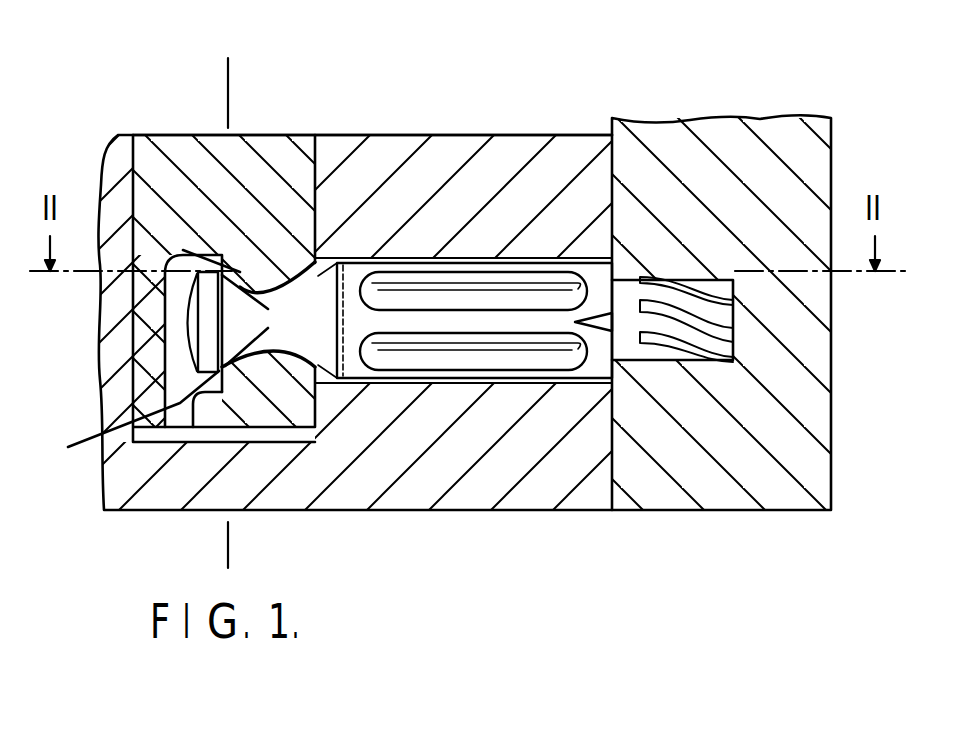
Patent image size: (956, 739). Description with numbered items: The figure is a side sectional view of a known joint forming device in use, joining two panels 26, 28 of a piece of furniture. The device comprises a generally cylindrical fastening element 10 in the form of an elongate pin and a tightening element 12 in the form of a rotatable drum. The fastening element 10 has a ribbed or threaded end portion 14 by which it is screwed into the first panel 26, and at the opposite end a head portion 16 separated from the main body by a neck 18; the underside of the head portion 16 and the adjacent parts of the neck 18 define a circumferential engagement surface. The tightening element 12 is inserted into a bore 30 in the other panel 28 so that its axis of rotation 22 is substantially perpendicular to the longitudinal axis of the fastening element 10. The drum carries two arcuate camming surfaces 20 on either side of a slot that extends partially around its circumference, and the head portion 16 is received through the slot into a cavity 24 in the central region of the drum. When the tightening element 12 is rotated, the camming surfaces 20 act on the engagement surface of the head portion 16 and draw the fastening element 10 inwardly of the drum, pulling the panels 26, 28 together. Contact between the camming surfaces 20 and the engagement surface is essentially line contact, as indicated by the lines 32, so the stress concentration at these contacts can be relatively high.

The fastening element 10 is at (418, 370).
The tightening element 12 is at (215, 413).
The ribbed or threaded end portion 14 is at (662, 350).
The head portion 16 is at (200, 323).
The neck 18 is at (242, 287).
The arcuate camming surfaces 20 is at (285, 346).
The axis of rotation 22 is at (228, 85).
The cavity 24 is at (174, 358).
The panel 26 is at (760, 448).
The panel 28 is at (513, 452).
The bore 30 is at (348, 220).
The lines 32 is at (183, 252).